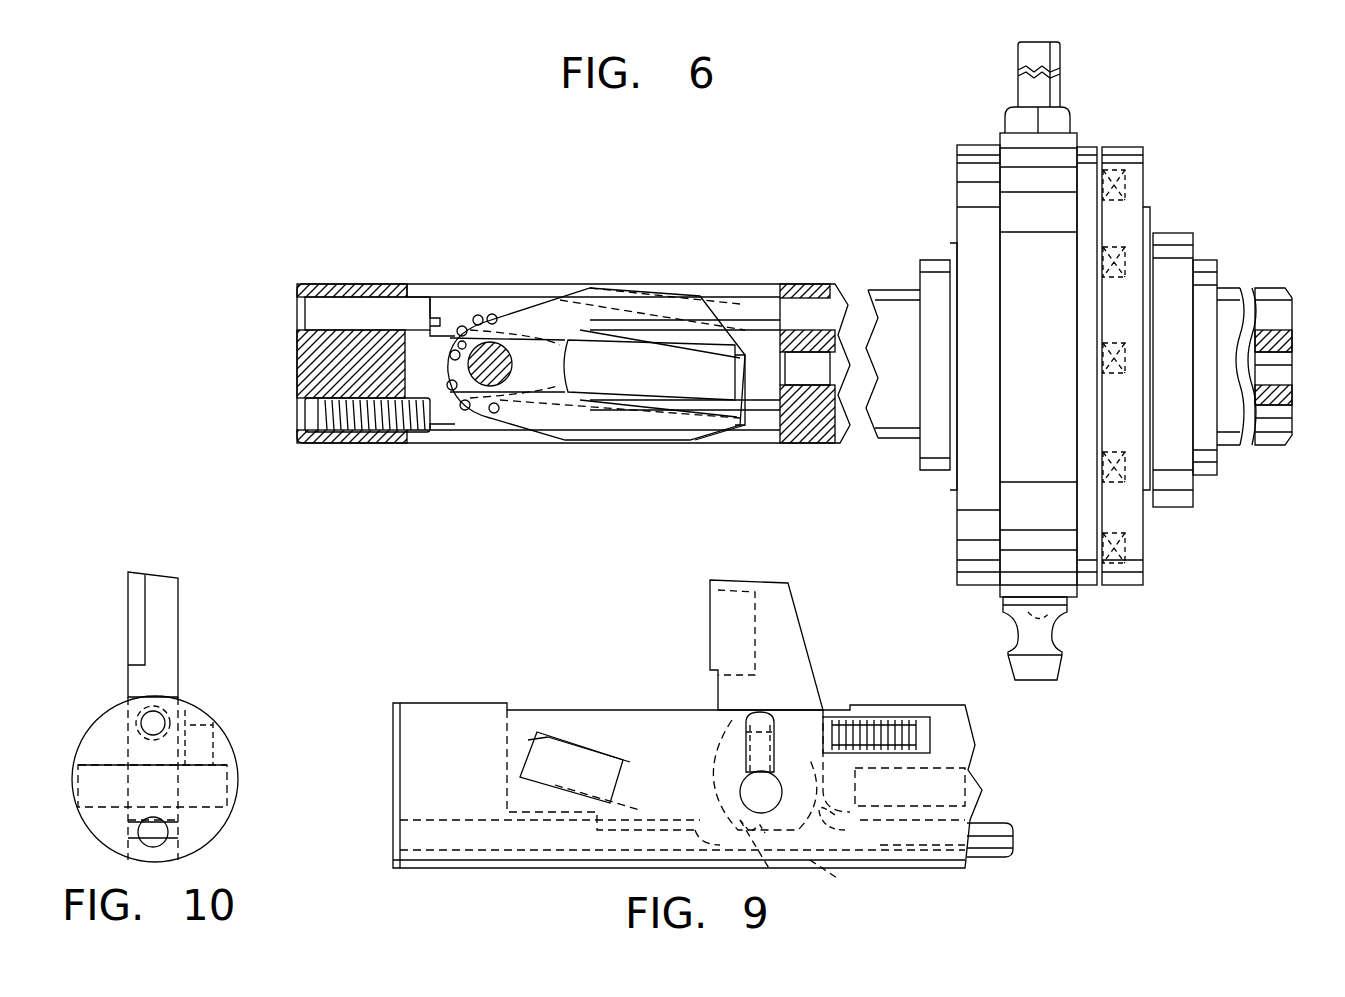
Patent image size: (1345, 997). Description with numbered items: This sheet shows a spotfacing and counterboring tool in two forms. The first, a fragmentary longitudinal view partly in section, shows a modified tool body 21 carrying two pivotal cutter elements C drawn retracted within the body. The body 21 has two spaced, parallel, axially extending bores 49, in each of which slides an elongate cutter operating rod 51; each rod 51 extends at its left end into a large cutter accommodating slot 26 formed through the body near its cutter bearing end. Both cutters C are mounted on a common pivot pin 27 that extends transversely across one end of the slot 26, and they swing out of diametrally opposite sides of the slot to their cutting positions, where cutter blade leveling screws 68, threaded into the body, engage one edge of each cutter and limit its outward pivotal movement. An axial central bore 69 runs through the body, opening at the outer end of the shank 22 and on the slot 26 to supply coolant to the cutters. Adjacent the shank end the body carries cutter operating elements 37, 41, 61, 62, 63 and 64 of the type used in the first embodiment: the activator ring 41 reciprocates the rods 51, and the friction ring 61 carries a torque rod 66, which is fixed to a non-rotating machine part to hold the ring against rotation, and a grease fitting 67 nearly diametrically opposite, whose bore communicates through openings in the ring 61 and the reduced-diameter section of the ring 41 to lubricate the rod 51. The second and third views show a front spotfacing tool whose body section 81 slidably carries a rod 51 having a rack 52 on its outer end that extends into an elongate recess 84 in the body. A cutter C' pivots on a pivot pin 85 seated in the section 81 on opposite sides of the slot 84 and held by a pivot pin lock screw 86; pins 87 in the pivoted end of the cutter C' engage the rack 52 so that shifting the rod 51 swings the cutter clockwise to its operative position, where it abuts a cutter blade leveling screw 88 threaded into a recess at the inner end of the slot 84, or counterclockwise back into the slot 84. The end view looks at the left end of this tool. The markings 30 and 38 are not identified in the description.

In FIG. 6, the tool body 21 is at (812, 297).
In FIG. 6, the cutter blade leveling screw 68 is at (335, 415).
In FIG. 6, the cutter element C is at (596, 359).
In FIG. 6, the pivot pin 27 is at (485, 390).
In FIG. 6, the cutter operating rod 51 is at (738, 300).
In FIG. 10, the cutter operating rod 51 is at (165, 835).
In FIG. 9, the cutter operating rod 51 is at (990, 830).
In FIG. 6, the cutter accommodating slot 26 is at (745, 390).
In FIG. 6, the axially extending bore 49 is at (775, 300).
In FIG. 6, the activator ring 41 is at (965, 551).
In FIG. 6, the friction ring 61 is at (1000, 135).
In FIG. 6, the torque rod 66 is at (1052, 92).
In FIG. 6, the cutter operating element 62 is at (1090, 148).
In FIG. 6, the cutter operating element 64 is at (1140, 150).
In FIG. 6, the cutter operating element 63 is at (1120, 205).
In FIG. 6, the grease fitting 67 is at (1062, 622).
In FIG. 6, the shank 22 is at (1268, 290).
In FIG. 6, the cutter operating element 37 is at (1210, 455).
In FIG. 6, the axial central bore 69 is at (1280, 385).
In FIG. 10, the tool body section 81 is at (228, 820).
In FIG. 9, the tool body section 81 is at (890, 708).
In FIG. 10, the cutter C' is at (116, 634).
In FIG. 9, the cutter C' is at (722, 640).
In FIG. 10, the cutter blade leveling screw 88 is at (170, 715).
In FIG. 10, the pivot pin 85 is at (105, 760).
In FIG. 9, the pivot pin 85 is at (735, 815).
In FIG. 10, the pivot pin lock screw 86 is at (220, 742).
In FIG. 9, the pivot pin lock screw 86 is at (745, 725).
In FIG. 9, the actuator body 30 is at (500, 680).
In FIG. 9, the elongate notch or recess 84 is at (510, 725).
In FIG. 9, the bore 38 is at (828, 712).
In FIG. 9, the pins 87 is at (740, 815).
In FIG. 9, the rack 52 is at (860, 845).